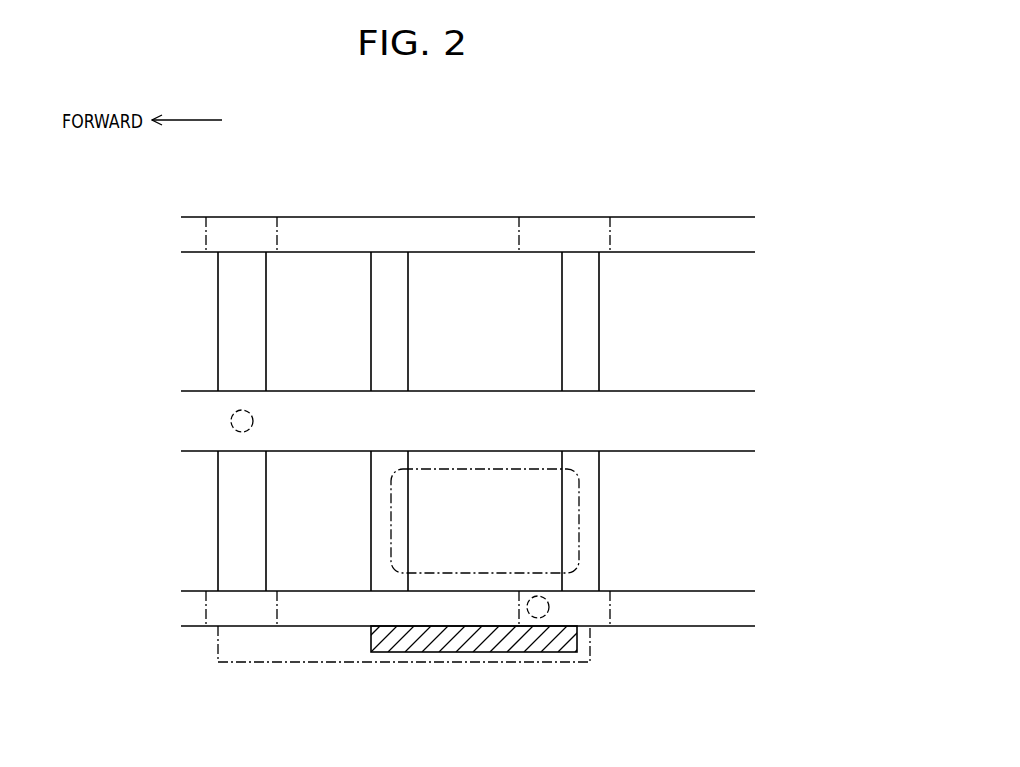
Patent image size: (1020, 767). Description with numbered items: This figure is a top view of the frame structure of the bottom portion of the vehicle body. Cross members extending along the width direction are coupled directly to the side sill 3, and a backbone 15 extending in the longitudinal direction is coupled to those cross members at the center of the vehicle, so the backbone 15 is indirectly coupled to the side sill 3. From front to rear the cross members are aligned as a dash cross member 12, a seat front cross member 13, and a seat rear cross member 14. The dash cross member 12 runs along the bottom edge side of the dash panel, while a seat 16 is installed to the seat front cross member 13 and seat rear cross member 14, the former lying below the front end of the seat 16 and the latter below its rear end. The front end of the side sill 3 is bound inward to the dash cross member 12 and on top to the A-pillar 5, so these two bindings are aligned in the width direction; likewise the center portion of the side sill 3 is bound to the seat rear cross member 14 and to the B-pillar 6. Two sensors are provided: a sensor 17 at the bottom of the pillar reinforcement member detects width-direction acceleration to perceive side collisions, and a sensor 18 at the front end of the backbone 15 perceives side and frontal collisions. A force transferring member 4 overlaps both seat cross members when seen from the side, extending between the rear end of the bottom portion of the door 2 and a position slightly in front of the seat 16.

The door 2 is at (250, 667).
The side sill 3 is at (694, 212).
The force transferring member 4 is at (448, 652).
The A-pillar 5 is at (200, 605).
The B-pillar 6 is at (617, 611).
The dash cross member 12 is at (213, 318).
The seat front cross member 13 is at (360, 313).
The seat rear cross member 14 is at (603, 332).
The backbone 15 is at (312, 458).
The seat 16 is at (582, 527).
The sensor 17 is at (557, 608).
The sensor 18 is at (228, 417).